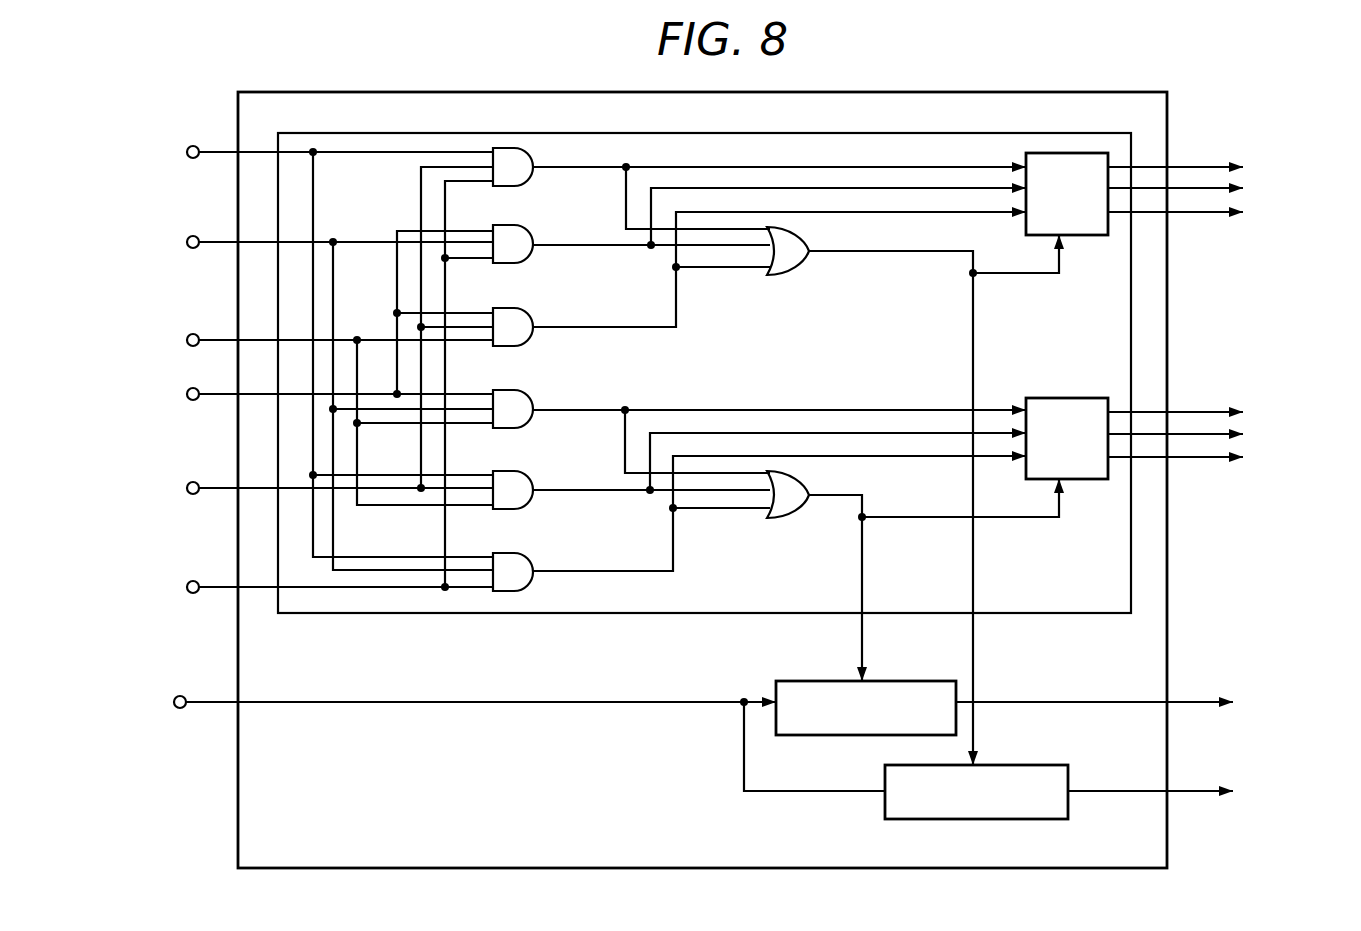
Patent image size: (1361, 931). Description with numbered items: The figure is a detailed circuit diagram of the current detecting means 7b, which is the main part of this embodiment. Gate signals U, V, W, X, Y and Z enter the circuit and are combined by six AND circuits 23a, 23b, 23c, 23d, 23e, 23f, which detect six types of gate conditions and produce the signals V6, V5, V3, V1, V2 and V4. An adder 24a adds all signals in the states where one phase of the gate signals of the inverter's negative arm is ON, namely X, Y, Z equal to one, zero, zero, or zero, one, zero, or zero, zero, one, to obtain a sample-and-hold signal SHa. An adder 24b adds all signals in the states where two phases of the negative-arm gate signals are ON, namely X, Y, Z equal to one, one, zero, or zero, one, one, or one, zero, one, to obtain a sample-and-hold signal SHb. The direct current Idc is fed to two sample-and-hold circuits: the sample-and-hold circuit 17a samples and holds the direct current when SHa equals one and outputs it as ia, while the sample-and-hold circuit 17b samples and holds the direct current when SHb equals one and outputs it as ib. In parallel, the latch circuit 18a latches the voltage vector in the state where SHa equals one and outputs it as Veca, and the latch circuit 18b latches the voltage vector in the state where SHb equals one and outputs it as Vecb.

The current detecting means 7b is at (618, 857).
The AND circuit 23a is at (535, 187).
The AND circuit 23b is at (535, 264).
The AND circuit 23c is at (535, 347).
The AND circuit 23d is at (535, 429).
The AND circuit 23e is at (535, 510).
The AND circuit 23f is at (535, 592).
The adder 24a is at (794, 508).
The adder 24b is at (794, 264).
The latch circuit 18a is at (1078, 481).
The latch circuit 18b is at (1078, 236).
The sample-and-hold circuit 17a is at (864, 737).
The sample-and-hold circuit 17b is at (989, 822).